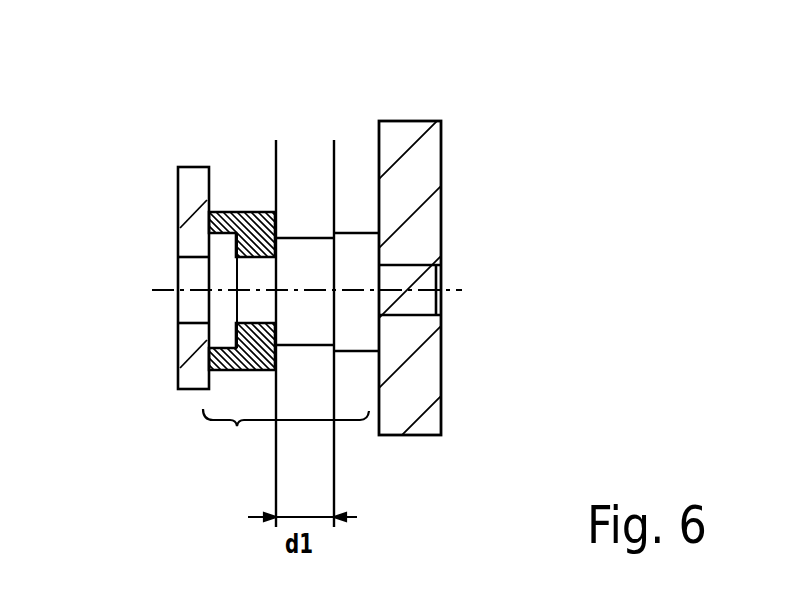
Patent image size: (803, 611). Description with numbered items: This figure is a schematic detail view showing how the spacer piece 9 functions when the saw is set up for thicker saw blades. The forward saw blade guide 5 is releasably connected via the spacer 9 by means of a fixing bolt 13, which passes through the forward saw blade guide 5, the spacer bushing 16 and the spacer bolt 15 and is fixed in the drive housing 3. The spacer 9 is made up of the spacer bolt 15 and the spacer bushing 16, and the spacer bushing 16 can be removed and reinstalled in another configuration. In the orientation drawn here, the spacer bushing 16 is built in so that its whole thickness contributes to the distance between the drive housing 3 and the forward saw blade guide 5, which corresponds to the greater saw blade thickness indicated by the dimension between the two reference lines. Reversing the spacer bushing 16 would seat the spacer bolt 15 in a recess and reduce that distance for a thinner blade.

The drive housing 3 is at (393, 138).
The forward saw blade guide 5 is at (193, 185).
The spacer piece 9 is at (286, 448).
The fixing bolt 13 is at (185, 305).
The spacer bolt 15 is at (347, 340).
The spacer bushing 16 is at (250, 211).